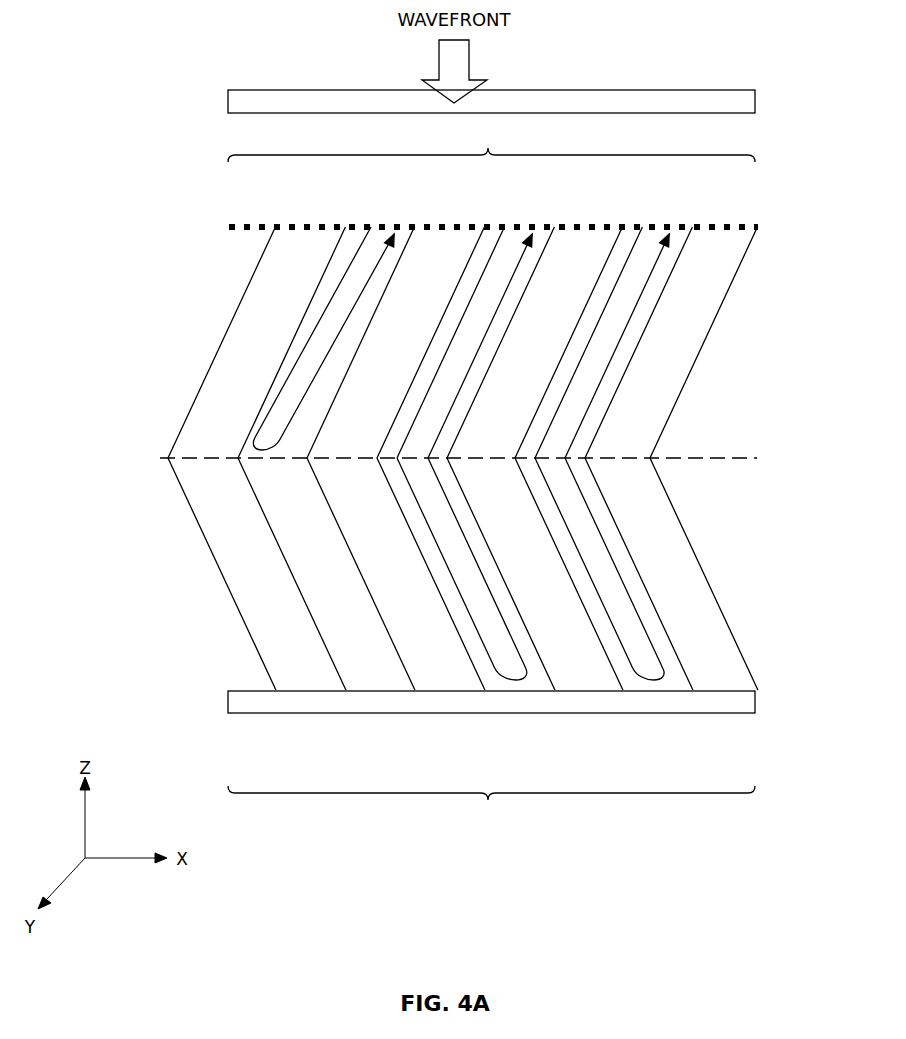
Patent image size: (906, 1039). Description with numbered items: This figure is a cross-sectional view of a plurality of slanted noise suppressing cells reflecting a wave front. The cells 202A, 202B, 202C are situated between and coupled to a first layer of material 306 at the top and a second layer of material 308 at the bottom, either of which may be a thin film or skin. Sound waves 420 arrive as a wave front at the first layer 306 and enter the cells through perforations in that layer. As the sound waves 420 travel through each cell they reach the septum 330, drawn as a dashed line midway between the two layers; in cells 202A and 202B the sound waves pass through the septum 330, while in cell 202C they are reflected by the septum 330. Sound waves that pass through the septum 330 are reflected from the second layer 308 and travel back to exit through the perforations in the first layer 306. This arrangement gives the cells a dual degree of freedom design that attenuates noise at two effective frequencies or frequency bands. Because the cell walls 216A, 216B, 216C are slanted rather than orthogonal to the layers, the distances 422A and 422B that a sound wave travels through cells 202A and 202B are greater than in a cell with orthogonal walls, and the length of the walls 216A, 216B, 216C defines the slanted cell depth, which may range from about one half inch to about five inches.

The sound waves 420 is at (227, 100).
The first layer of material 306 is at (491, 142).
The wall 216A is at (630, 254).
The wall 216B is at (472, 253).
The wall 216C is at (402, 258).
The distance 422A is at (517, 267).
The distance 422B is at (619, 338).
The septum 330 is at (170, 460).
The cell 202A is at (636, 683).
The cell 202B is at (537, 683).
The cell 202C is at (378, 673).
The second layer of material 308 is at (491, 811).